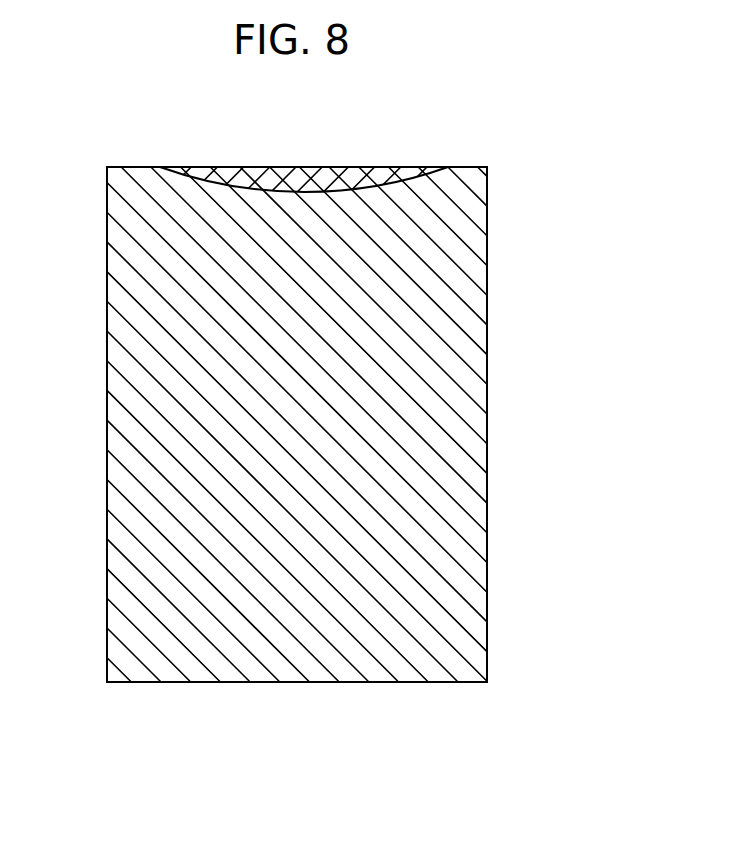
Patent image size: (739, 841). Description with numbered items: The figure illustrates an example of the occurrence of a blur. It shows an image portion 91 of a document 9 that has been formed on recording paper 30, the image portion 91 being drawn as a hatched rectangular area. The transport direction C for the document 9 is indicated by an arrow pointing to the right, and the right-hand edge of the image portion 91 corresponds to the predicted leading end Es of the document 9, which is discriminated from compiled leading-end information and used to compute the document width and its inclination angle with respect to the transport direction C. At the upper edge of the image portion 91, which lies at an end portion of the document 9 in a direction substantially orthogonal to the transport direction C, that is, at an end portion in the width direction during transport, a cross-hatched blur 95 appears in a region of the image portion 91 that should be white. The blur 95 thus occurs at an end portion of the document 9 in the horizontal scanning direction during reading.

The image portion 91 is at (142, 437).
The blur 95 is at (288, 173).
The predicted leading end Es is at (487, 620).
The transport direction C is at (533, 420).
The recording paper 30 is at (297, 739).
The document 9 is at (223, 714).